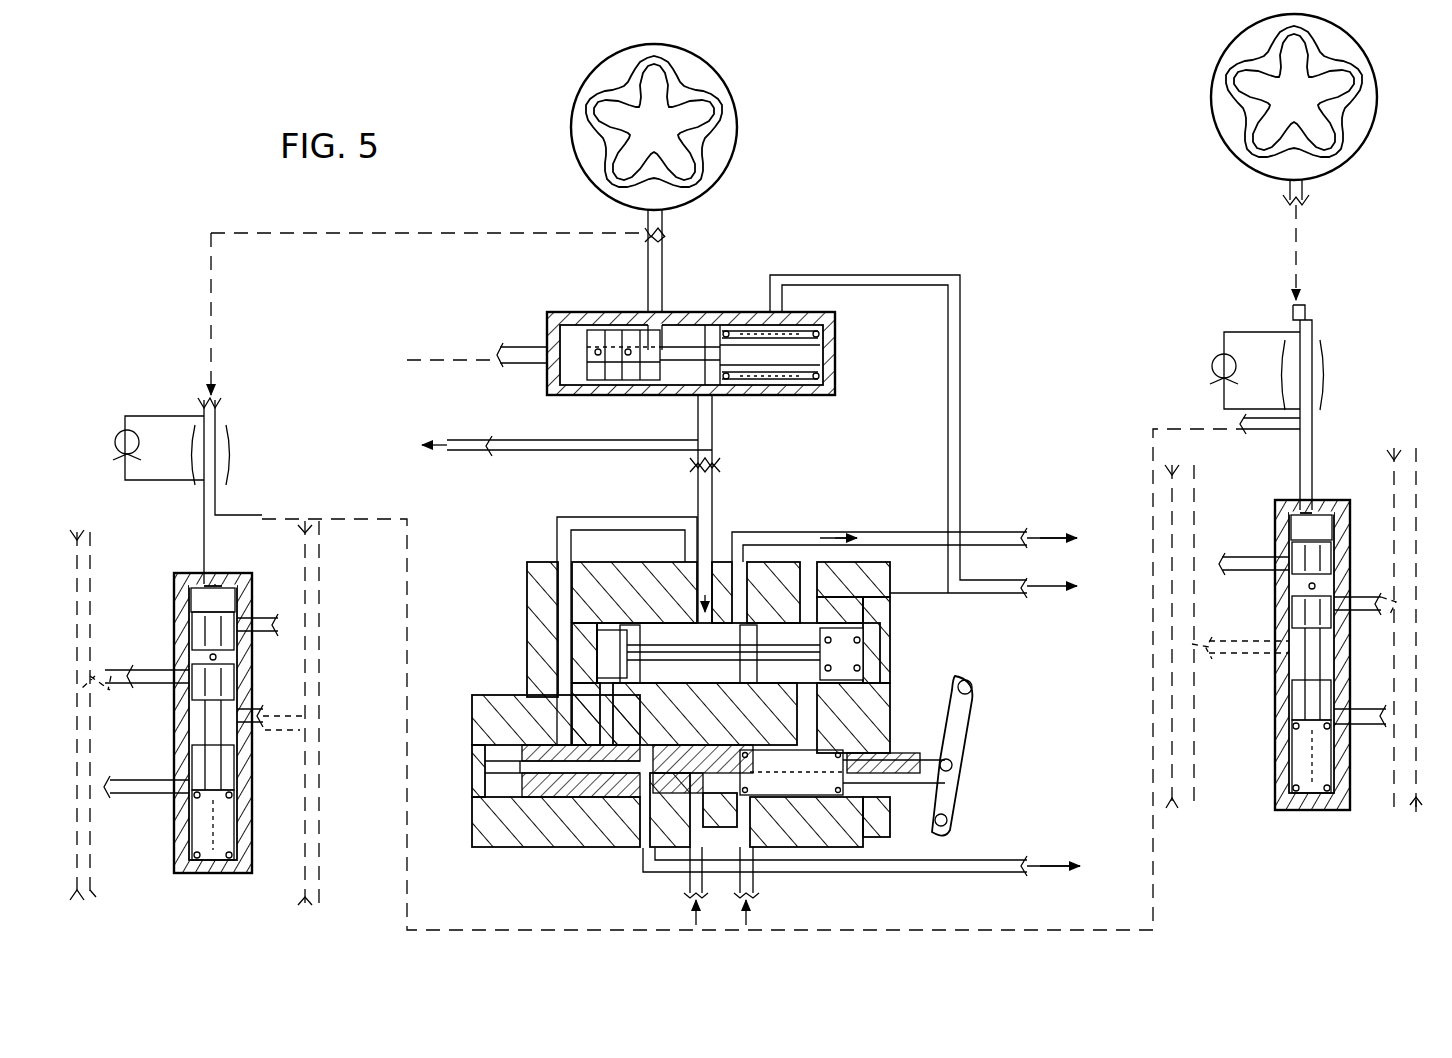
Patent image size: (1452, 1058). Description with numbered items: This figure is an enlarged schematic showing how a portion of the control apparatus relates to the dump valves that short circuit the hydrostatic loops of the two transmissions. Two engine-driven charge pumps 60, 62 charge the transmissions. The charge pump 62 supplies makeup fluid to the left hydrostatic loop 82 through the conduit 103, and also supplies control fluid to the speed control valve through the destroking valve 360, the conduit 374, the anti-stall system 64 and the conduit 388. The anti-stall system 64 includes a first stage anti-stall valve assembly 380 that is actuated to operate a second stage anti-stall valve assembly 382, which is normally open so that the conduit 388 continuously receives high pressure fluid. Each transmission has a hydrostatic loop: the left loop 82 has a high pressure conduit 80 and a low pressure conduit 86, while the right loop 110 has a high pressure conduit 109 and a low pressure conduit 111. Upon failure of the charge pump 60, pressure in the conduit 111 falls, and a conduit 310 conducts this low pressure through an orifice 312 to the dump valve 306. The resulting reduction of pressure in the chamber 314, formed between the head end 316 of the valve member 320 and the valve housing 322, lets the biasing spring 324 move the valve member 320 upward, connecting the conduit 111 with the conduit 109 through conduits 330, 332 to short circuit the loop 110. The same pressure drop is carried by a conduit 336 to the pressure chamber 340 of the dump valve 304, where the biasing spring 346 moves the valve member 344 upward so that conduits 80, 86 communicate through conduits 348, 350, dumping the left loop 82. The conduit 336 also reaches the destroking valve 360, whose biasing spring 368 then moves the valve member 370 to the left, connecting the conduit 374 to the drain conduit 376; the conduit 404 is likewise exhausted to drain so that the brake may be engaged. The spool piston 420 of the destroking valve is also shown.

The charge pump 60 is at (1211, 97).
The charge pump 62 is at (738, 124).
The anti-stall system 64 is at (620, 850).
The conduit 80 is at (300, 700).
The hydrostatic loop 82 is at (155, 880).
The conduit 86 is at (92, 574).
The conduit 103 is at (668, 245).
The conduit 109 is at (1420, 440).
The hydrostatic loop 110 is at (1178, 812).
The conduit 111 is at (1186, 470).
The dump valve 304 is at (180, 560).
The dump valve 306 is at (1322, 500).
The conduit 310 is at (1318, 200).
The orifice 312 is at (1324, 378).
The chamber 314 is at (1298, 512).
The head end 316 is at (1325, 560).
The valve member 320 is at (1305, 690).
The valve housing 322 is at (1290, 540).
The biasing spring 324 is at (1295, 760).
The conduit 330 is at (1268, 645).
The conduit 332 is at (1372, 620).
The conduit 336 is at (400, 358).
The pressure chamber 340 is at (225, 585).
The valve member 344 is at (200, 755).
The biasing spring 346 is at (165, 847).
The conduit 348 is at (115, 668).
The conduit 350 is at (295, 712).
The destroking valve 360 is at (540, 318).
The biasing spring 368 is at (782, 375).
The valve member 370 is at (690, 338).
The conduit 374 is at (720, 466).
The drain conduit 376 is at (965, 380).
The first stage anti-stall valve assembly 380 is at (560, 815).
The second stage anti-stall valve assembly 382 is at (585, 650).
The conduit 388 is at (875, 535).
The conduit 404 is at (528, 438).
The spool piston 420 is at (603, 325).